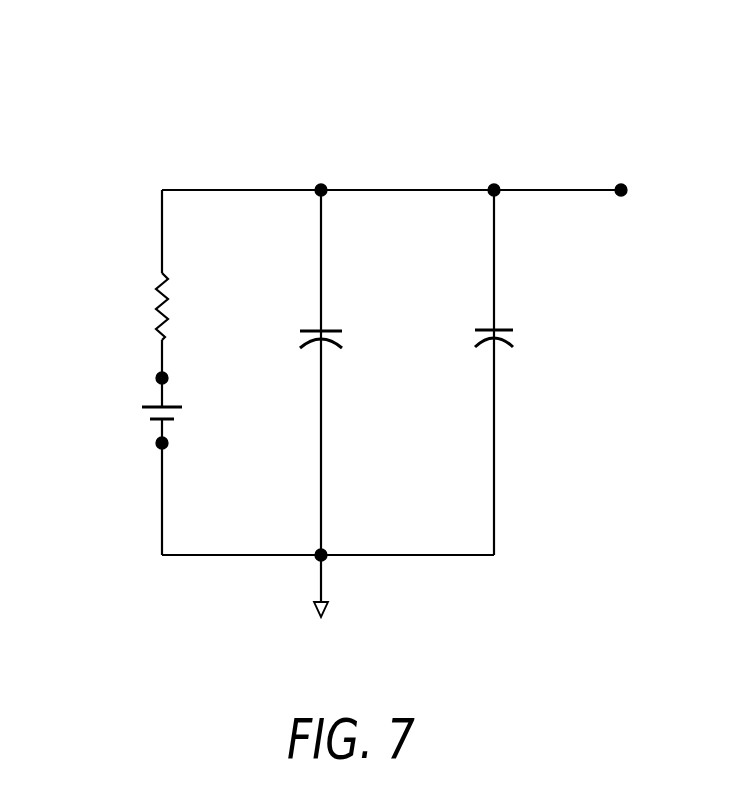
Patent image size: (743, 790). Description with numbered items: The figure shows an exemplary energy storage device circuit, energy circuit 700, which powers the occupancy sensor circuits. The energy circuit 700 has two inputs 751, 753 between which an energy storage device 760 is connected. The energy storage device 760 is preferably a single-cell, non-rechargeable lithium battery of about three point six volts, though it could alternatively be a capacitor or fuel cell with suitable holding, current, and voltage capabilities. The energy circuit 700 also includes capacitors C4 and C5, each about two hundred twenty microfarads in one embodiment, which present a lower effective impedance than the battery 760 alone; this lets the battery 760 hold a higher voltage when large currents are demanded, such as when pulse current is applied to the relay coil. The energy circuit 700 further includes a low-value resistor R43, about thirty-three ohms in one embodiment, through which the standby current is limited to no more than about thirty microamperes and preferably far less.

The energy circuit 700 is at (566, 130).
The input 751 is at (160, 378).
The input 753 is at (160, 443).
The energy storage device 760 is at (180, 412).
The resistor R43 is at (166, 300).
The capacitor C5 is at (345, 336).
The capacitor C4 is at (513, 336).